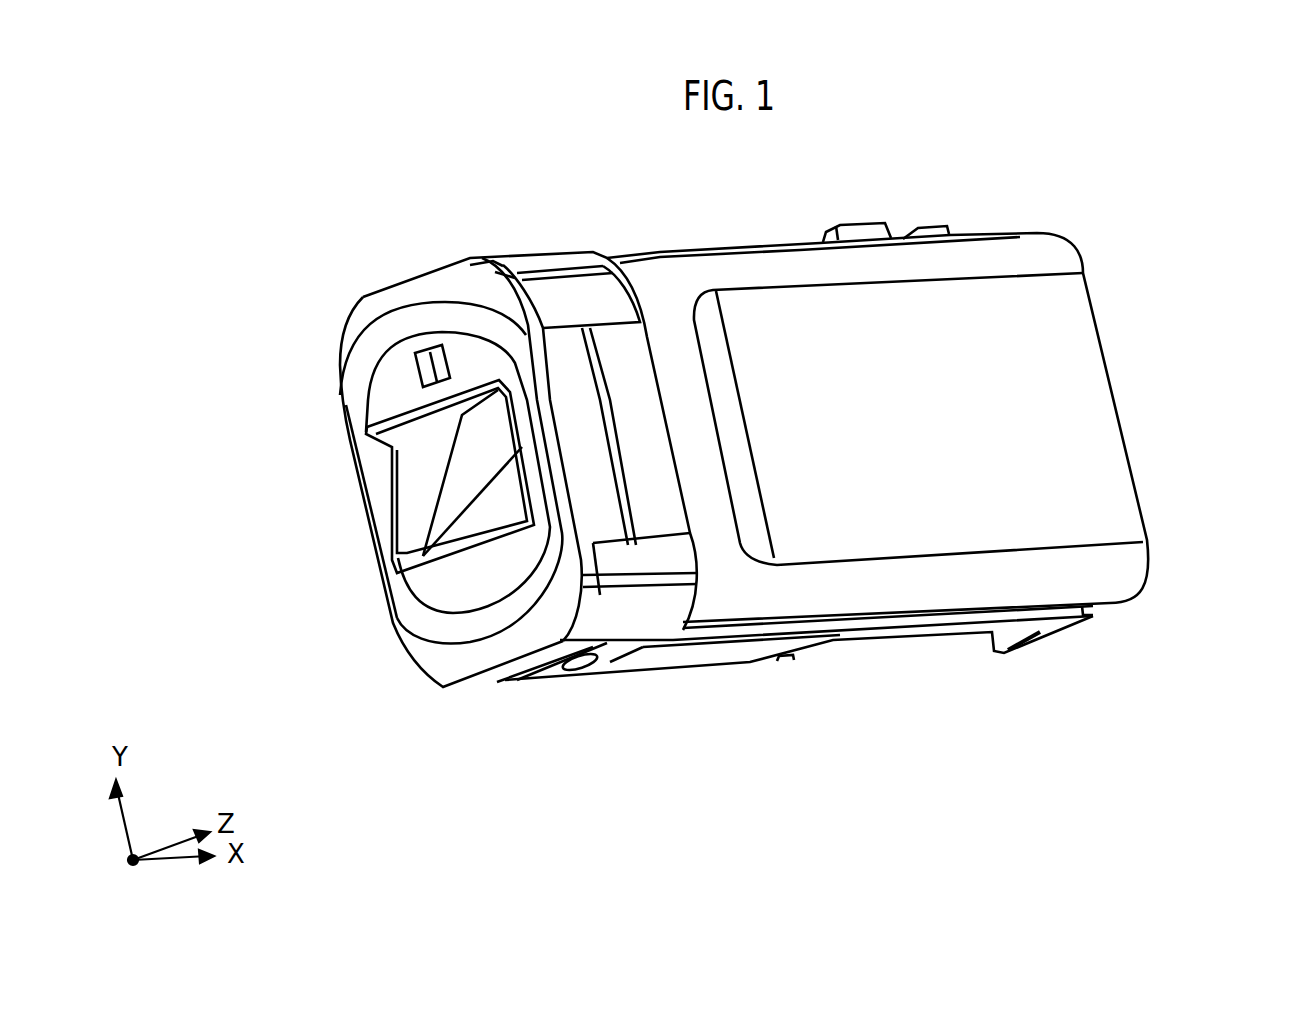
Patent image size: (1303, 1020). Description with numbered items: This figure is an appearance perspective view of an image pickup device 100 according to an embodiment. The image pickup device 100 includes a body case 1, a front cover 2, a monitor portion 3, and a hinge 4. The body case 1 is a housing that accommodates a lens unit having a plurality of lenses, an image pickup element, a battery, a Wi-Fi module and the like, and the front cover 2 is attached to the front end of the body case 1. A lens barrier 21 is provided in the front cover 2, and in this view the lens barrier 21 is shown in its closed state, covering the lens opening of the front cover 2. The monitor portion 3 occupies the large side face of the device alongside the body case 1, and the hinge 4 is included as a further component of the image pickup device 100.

The image pickup device 100 is at (1162, 306).
The body case 1 is at (607, 625).
The front cover 2 is at (387, 395).
The lens barrier 21 is at (418, 477).
The monitor portion 3 is at (1097, 392).
The hinge 4 is at (662, 513).